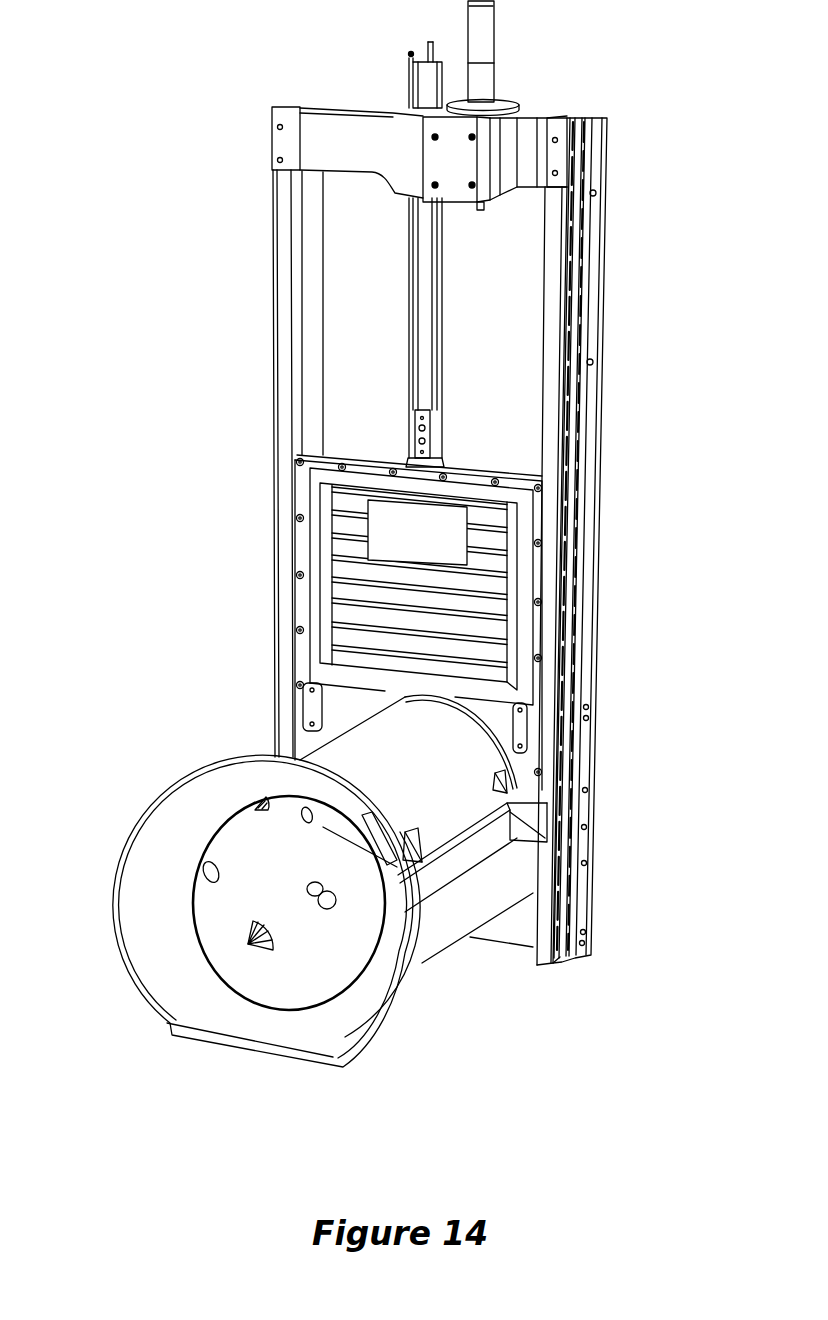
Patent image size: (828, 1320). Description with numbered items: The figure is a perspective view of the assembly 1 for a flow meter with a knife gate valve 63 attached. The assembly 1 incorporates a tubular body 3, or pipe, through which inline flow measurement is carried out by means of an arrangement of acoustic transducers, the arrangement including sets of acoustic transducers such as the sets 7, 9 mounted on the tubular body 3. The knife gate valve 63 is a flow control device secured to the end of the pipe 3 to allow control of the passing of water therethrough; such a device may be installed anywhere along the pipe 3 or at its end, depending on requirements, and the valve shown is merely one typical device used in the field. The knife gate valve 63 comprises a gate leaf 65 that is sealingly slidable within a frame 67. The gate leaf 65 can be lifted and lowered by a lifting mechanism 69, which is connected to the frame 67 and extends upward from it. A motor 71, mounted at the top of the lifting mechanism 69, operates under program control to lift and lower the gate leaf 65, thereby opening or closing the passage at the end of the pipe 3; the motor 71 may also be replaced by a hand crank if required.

The assembly 1 is at (370, 534).
The tubular body 3 is at (342, 970).
The set of acoustic transducers 7 is at (230, 813).
The set of acoustic transducers 9 is at (230, 934).
The knife gate valve 63 is at (620, 504).
The gate leaf 65 is at (303, 487).
The frame 67 is at (621, 310).
The lifting mechanism 69 is at (413, 352).
The motor 71 is at (482, 22).